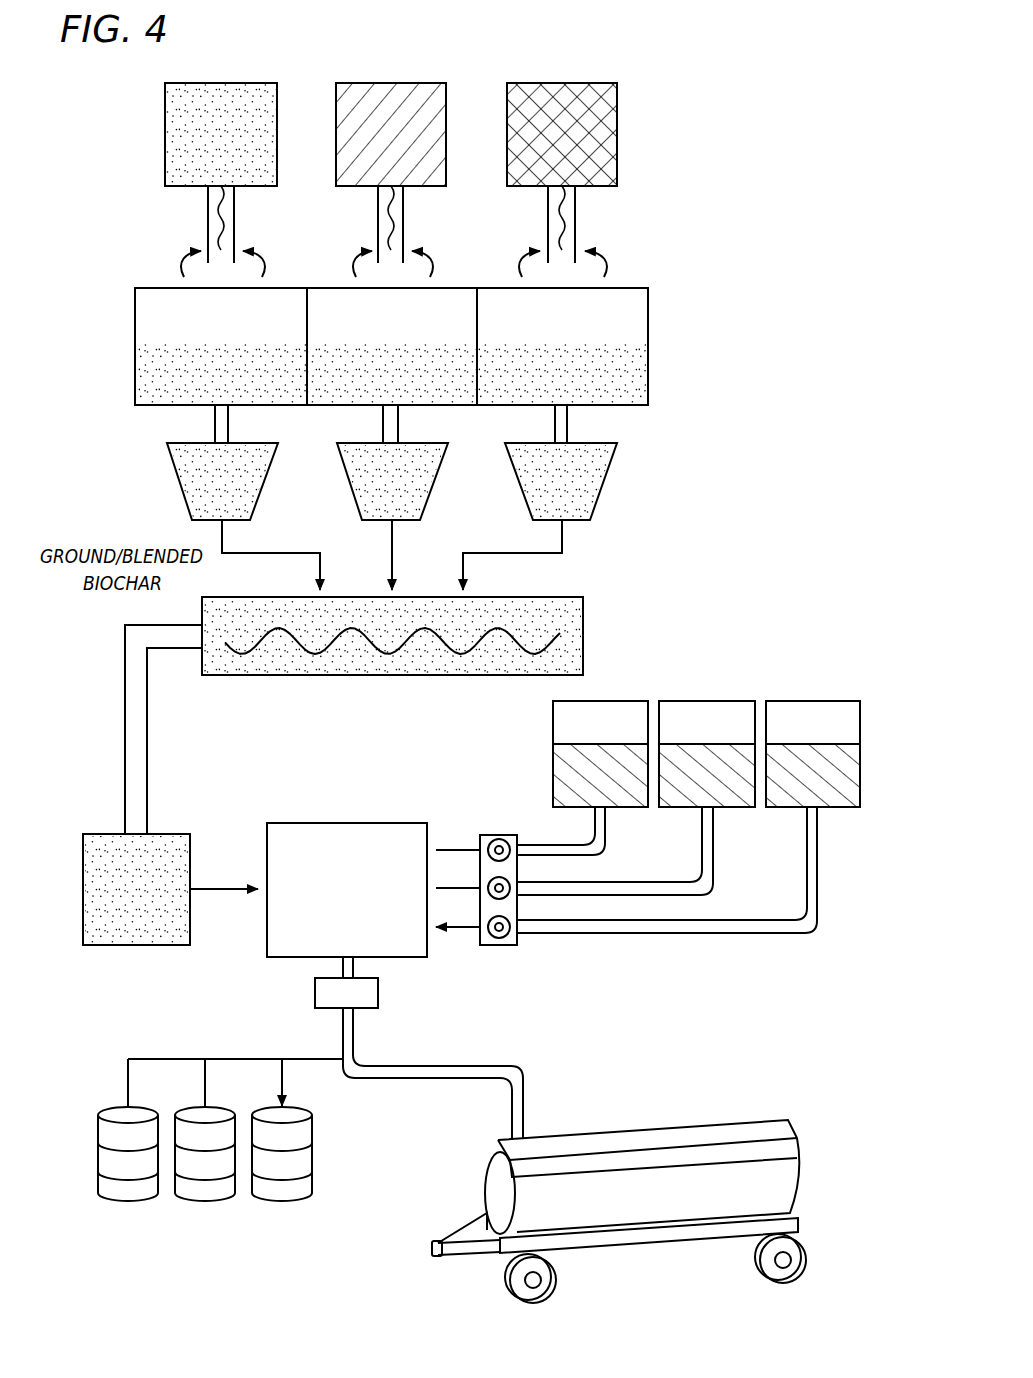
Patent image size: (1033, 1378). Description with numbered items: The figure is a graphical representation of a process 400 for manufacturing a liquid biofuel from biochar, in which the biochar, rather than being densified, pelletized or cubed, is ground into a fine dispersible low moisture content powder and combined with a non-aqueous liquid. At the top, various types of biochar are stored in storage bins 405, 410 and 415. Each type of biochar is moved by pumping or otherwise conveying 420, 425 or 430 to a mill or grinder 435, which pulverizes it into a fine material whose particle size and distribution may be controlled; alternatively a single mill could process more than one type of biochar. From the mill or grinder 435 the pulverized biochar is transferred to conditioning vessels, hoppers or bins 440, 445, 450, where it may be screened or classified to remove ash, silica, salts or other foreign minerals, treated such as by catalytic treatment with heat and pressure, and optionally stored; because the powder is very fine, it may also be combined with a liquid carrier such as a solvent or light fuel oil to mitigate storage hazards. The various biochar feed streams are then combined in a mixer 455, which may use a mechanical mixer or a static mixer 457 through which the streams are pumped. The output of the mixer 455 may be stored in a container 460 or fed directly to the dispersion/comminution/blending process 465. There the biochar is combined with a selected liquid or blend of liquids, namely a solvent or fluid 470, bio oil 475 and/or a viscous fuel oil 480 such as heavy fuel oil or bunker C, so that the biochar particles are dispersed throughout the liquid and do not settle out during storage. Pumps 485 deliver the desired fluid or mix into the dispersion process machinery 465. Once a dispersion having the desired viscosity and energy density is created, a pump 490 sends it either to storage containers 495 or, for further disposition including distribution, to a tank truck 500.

The biochar fuel production system 400 is at (702, 164).
The storage bin 405 is at (217, 83).
The storage bin 410 is at (402, 83).
The storage bin 415 is at (575, 83).
The conveying 420 is at (208, 221).
The conveying 425 is at (378, 221).
The conveying 430 is at (548, 221).
The mill or grinder 435 is at (648, 340).
The conditioning vessel, hopper or bin 440 is at (177, 480).
The conditioning vessel, hopper or bin 445 is at (350, 477).
The conditioning vessel, hopper or bin 450 is at (603, 487).
The mixer 455 is at (583, 622).
The static mixer 457 is at (393, 655).
The container 460 is at (138, 945).
The dispersion/comminution/blending process 465 is at (323, 823).
The solvent or fluid 470 is at (607, 700).
The bio oil 475 is at (700, 700).
The viscous fuel oil 480 is at (803, 700).
The pumps 485 is at (493, 945).
The pump 490 is at (378, 993).
The storage containers 495 is at (312, 1153).
The tank truck 500 is at (675, 1138).